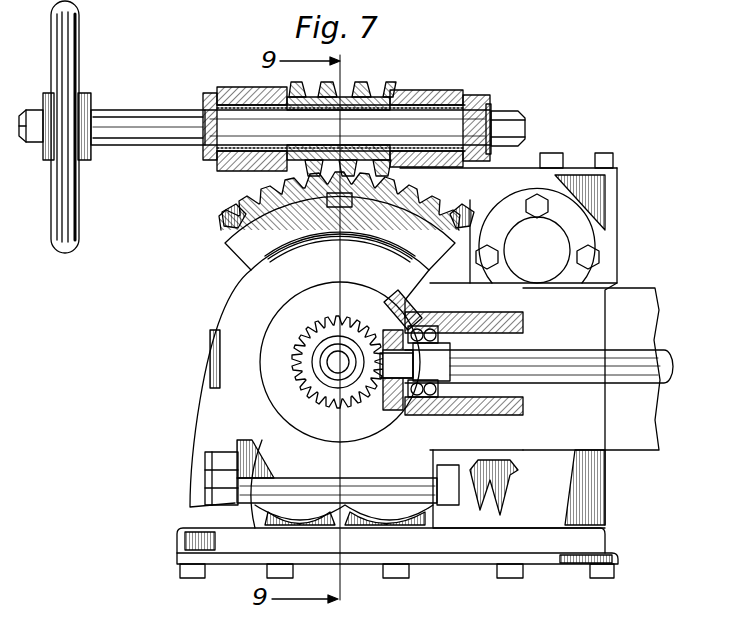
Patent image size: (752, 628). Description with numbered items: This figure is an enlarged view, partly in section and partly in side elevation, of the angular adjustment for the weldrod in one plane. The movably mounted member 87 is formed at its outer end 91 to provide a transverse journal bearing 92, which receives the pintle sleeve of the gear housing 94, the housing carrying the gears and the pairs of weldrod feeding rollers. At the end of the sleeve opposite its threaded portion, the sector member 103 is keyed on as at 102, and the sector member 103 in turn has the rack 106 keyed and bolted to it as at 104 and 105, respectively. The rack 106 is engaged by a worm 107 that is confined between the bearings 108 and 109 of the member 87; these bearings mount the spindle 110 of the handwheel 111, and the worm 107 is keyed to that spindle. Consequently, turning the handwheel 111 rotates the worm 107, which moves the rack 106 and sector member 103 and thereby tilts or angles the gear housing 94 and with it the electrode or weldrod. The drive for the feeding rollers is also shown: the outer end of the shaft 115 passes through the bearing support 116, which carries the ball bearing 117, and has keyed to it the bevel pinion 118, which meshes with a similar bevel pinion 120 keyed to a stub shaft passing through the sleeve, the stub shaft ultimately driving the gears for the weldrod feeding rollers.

The movably mounted member 87 is at (636, 291).
The outer end 91 is at (523, 306).
The transverse journal bearing 92 is at (237, 502).
The gear housing 94 is at (582, 497).
The key 102 is at (328, 303).
The sector member 103 is at (247, 296).
The key 104 is at (346, 204).
The bolt 105 is at (222, 212).
The rack 106 is at (262, 182).
The worm 107 is at (353, 84).
The bearing 108 is at (233, 86).
The bearing 109 is at (425, 90).
The spindle 110 is at (108, 110).
The handwheel 111 is at (80, 32).
The shaft 115 is at (640, 357).
The bearing support 116 is at (510, 410).
The ball bearing 117 is at (420, 407).
The bevel pinion 118 is at (378, 303).
The bevel pinion 120 is at (284, 363).